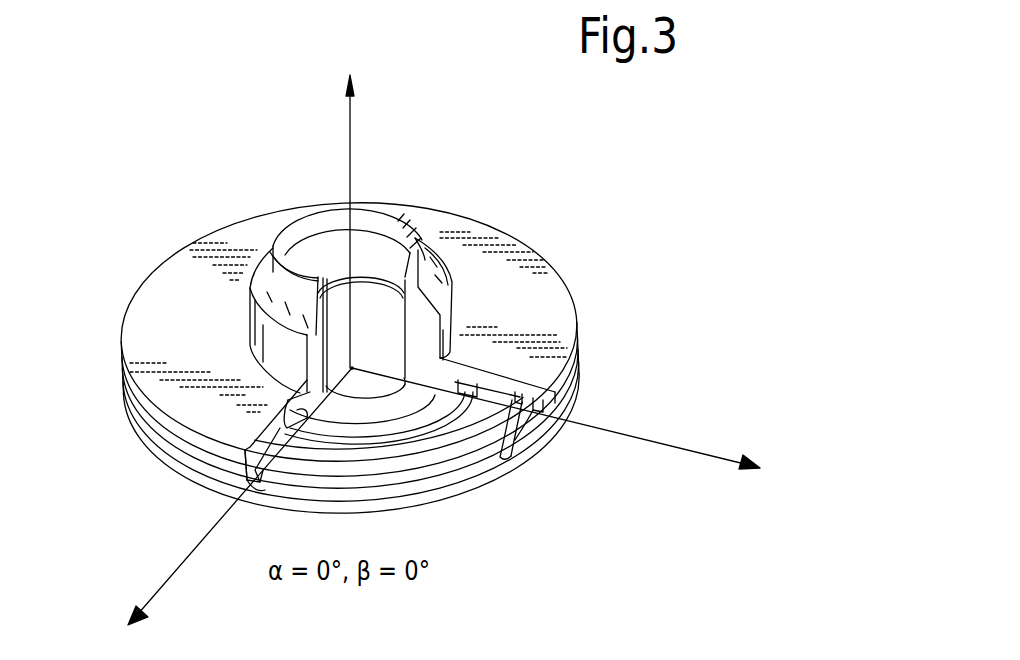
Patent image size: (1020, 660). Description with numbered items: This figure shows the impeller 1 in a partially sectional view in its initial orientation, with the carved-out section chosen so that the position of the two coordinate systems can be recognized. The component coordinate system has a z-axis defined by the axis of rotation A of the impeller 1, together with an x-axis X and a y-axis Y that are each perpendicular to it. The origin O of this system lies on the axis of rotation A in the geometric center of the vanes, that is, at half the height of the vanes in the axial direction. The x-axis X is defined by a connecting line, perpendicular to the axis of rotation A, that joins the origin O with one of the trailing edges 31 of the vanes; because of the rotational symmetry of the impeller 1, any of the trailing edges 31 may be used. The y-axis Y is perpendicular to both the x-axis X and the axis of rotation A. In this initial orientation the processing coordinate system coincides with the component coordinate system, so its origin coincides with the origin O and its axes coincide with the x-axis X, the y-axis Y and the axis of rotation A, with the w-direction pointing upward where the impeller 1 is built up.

The impeller 1 is at (624, 164).
The trailing edges 31 is at (247, 473).
The axis of rotation A is at (353, 139).
The x-axis X is at (160, 582).
The y-axis Y is at (635, 438).
The origin O is at (352, 368).